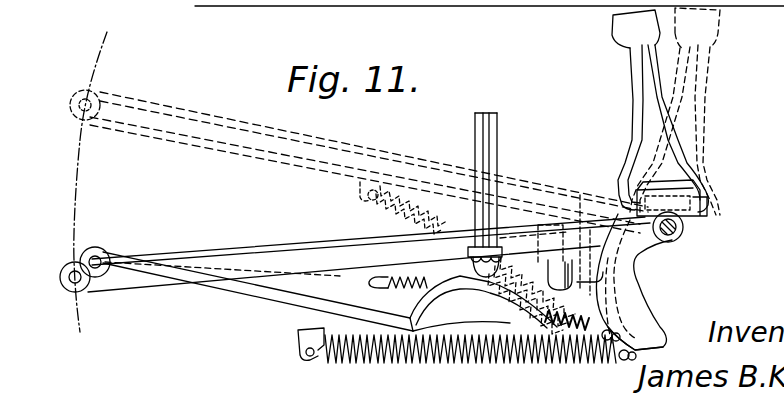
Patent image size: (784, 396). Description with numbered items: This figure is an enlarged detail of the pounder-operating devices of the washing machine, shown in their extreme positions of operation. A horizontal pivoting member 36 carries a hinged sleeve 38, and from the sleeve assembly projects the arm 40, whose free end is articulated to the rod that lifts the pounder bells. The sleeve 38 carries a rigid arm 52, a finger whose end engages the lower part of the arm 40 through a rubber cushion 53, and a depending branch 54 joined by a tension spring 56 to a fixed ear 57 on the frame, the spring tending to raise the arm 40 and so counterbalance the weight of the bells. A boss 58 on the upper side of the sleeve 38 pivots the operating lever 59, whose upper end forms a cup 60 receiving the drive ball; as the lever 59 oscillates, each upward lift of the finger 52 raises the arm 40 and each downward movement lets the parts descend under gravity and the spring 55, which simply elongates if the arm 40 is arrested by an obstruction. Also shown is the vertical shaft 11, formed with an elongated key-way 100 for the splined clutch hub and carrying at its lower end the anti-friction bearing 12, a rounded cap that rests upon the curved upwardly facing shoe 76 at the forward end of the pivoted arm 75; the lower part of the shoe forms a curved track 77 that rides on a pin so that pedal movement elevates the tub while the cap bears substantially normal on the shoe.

The vertical shaft 11 is at (497, 153).
The anti-friction bearing 12 is at (467, 261).
The horizontal pivoting member 36 is at (672, 236).
The sleeve 38 is at (686, 235).
The arm 40 is at (287, 248).
The rigid arm 52 is at (598, 291).
The rubber cushion 53 is at (540, 262).
The depending branch 54 is at (645, 329).
The spring 55 is at (413, 280).
The tension spring 56 is at (391, 360).
The ear 57 is at (299, 360).
The boss 58 is at (705, 229).
The operating lever 59 is at (650, 107).
The cup 60 is at (622, 30).
The arm 75 is at (257, 297).
The shoe 76 is at (500, 294).
The curved track 77 is at (460, 293).
The key-way 100 is at (481, 137).